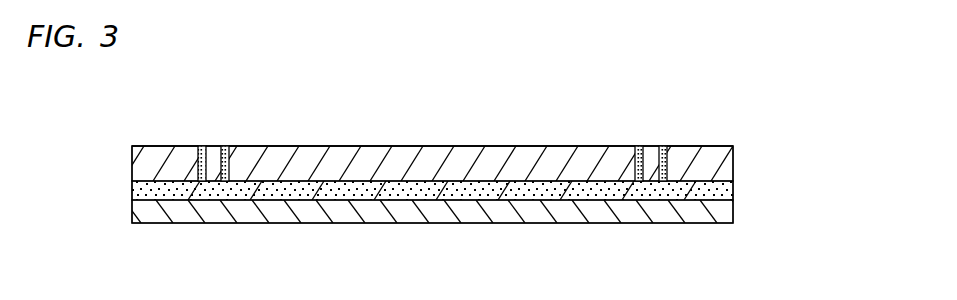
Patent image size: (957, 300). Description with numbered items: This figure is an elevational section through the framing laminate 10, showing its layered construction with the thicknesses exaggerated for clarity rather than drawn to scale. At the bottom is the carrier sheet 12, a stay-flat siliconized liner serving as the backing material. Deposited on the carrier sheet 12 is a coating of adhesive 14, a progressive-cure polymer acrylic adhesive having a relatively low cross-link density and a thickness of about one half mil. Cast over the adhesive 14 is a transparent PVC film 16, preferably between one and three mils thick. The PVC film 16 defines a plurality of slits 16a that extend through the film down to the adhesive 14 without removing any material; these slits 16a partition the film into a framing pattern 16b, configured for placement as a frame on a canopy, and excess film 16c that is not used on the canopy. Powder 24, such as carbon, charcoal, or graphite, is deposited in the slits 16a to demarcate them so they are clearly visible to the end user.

The framing laminate 10 is at (96, 114).
The carrier sheet 12 is at (132, 212).
The adhesive 14 is at (132, 192).
The PVC film 16 is at (128, 169).
The slits 16a is at (201, 146).
The framing pattern 16b is at (211, 146).
The excess film 16c is at (133, 146).
The powder 24 is at (198, 160).